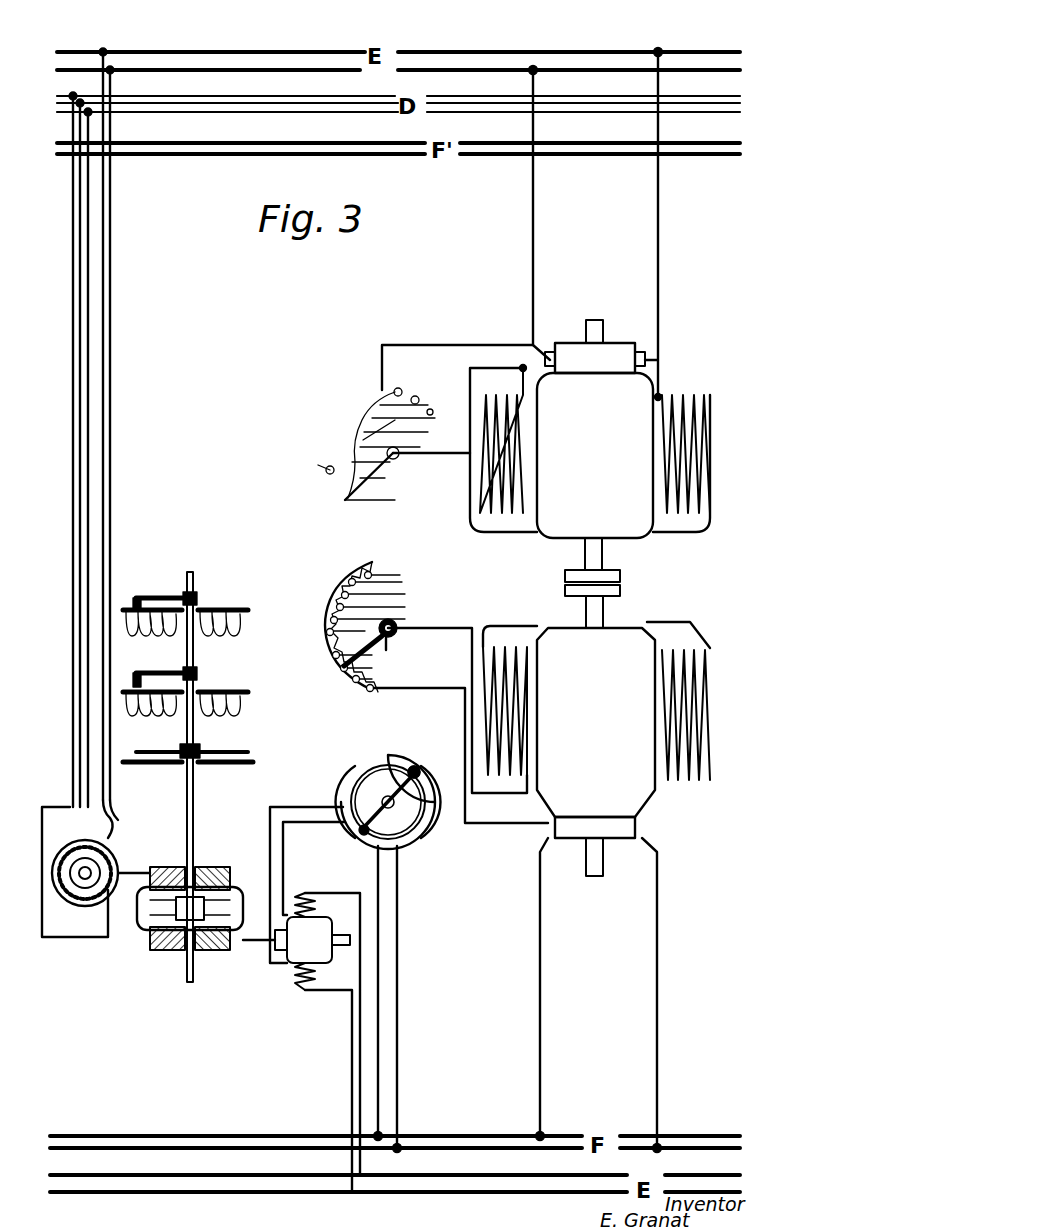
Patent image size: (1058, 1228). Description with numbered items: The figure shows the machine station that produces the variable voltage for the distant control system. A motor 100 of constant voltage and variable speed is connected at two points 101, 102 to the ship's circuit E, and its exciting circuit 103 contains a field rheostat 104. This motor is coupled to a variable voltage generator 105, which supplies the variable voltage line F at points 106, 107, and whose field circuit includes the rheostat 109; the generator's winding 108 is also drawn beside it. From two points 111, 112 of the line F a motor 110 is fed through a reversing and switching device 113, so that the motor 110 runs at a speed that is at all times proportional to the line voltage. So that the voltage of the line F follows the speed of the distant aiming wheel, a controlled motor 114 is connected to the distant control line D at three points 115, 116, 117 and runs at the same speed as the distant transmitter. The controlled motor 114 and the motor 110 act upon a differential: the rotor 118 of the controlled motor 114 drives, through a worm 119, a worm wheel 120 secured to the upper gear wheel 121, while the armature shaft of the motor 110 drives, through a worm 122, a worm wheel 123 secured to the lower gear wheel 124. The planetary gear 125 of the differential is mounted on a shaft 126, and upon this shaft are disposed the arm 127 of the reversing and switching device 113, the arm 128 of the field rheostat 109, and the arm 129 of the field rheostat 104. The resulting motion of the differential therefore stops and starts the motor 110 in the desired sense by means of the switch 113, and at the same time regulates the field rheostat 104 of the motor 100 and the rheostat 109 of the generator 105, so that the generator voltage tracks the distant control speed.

The motor 100 is at (628, 478).
The connection point 101 is at (532, 68).
The connection point 102 is at (658, 52).
The exciting circuit 103 is at (455, 503).
The field rheostat 104 is at (265, 655).
The variable voltage generator 105 is at (600, 725).
The supply point 106 is at (515, 1100).
The supply point 107 is at (622, 1100).
The field winding 108 is at (742, 808).
The rheostat 109 is at (302, 566).
The motor 110 is at (325, 1040).
The supply point 111 is at (450, 1070).
The supply point 112 is at (468, 1102).
The reversing and switching device 113 is at (470, 862).
The controlled motor 114 is at (78, 960).
The connection point 115 is at (73, 96).
The connection point 116 is at (82, 100).
The connection point 117 is at (88, 112).
The rotor 118 is at (122, 1000).
The worm 119 is at (145, 850).
The worm wheel 120 is at (180, 830).
The upper gear wheel 121 is at (248, 830).
The worm 122 is at (278, 1032).
The worm wheel 123 is at (205, 1000).
The lower gear wheel 124 is at (160, 1015).
The planetary gear 125 is at (270, 985).
The shaft 126 is at (240, 560).
The arm 127 is at (445, 756).
The arm 128 is at (300, 628).
The arm 129 is at (172, 552).